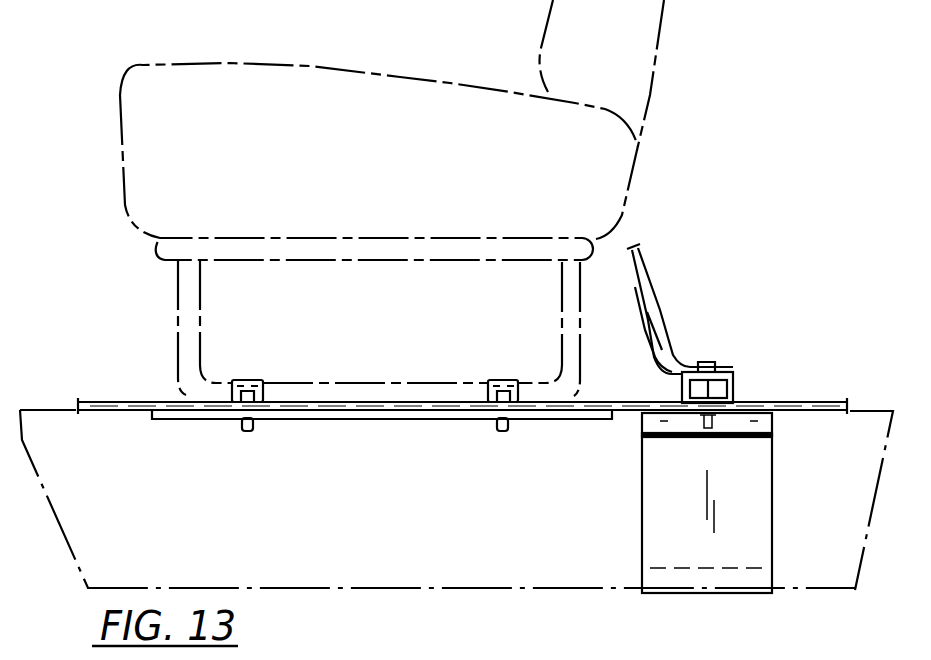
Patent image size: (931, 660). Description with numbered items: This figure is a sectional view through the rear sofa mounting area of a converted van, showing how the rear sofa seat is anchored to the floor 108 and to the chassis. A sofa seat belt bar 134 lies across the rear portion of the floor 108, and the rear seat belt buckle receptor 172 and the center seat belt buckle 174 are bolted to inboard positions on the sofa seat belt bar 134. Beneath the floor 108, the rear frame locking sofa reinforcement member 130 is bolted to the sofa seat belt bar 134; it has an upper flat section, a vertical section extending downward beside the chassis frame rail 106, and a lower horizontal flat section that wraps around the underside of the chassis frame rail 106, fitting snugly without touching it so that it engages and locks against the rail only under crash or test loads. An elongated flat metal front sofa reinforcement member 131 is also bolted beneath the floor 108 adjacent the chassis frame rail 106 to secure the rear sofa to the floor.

The chassis frame rail 106 is at (500, 590).
The floor 108 is at (105, 400).
The rear frame locking sofa reinforcement member 130 is at (641, 456).
The front sofa reinforcement member 131 is at (352, 420).
The sofa seat belt bar 134 is at (733, 378).
The rear seat belt buckle receptor 172 is at (720, 309).
The center seat belt buckle 174 is at (642, 273).